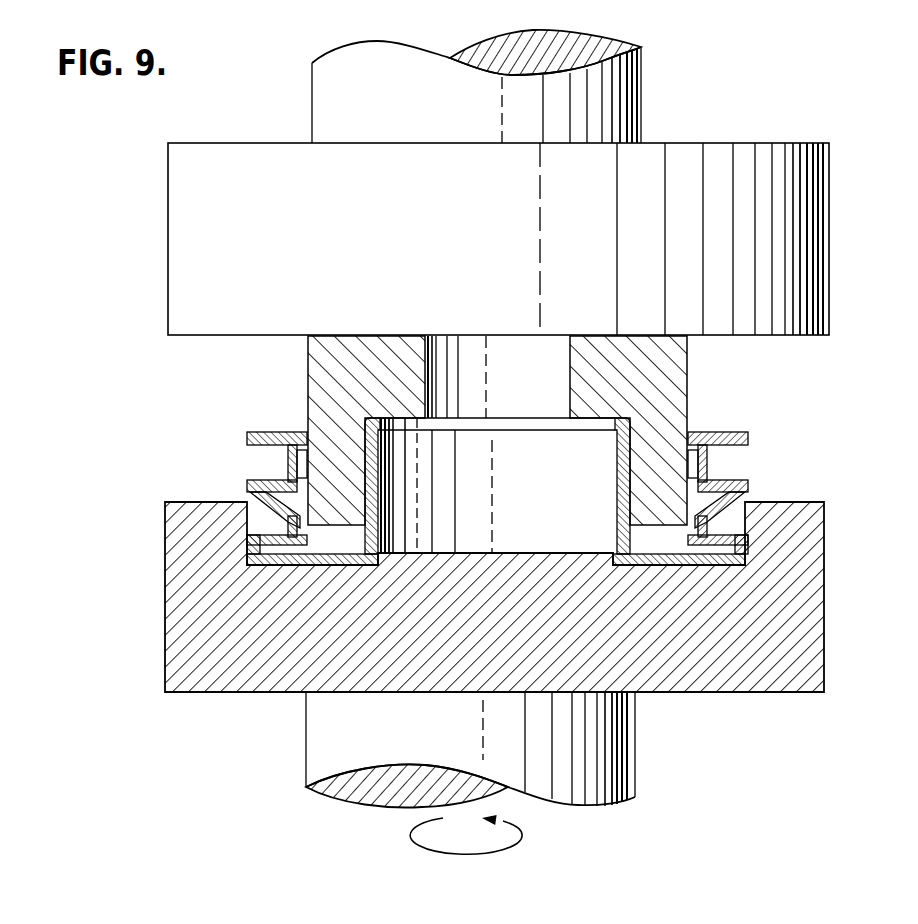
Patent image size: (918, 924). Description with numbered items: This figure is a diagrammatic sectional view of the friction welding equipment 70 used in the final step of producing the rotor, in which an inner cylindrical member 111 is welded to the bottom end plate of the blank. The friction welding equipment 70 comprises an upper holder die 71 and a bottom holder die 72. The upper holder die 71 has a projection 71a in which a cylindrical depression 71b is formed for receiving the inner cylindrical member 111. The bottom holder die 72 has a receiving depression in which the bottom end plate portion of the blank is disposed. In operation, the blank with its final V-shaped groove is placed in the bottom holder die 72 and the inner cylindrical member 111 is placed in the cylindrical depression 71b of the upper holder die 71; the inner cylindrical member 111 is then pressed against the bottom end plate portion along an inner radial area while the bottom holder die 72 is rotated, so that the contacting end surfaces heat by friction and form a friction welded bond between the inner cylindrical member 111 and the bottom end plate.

The friction welding equipment 70 is at (150, 376).
The upper holder die 71 is at (267, 128).
The projection 71a is at (320, 388).
The cylindrical depression 71b is at (630, 453).
The bottom holder die 72 is at (374, 550).
The inner cylindrical member 111 is at (382, 482).